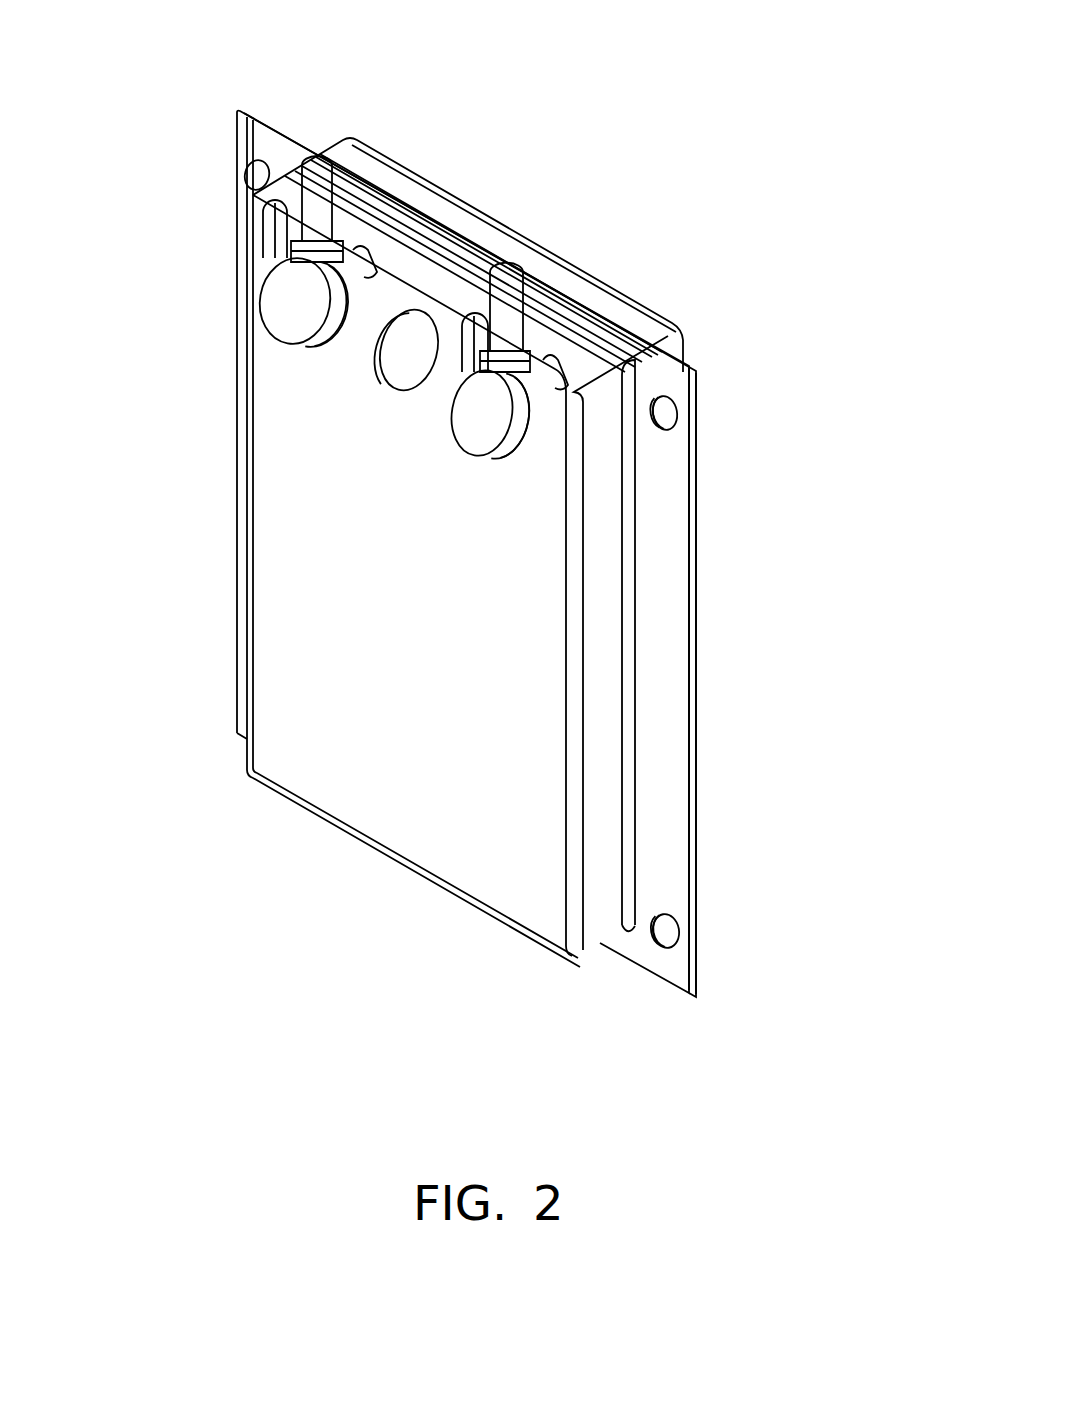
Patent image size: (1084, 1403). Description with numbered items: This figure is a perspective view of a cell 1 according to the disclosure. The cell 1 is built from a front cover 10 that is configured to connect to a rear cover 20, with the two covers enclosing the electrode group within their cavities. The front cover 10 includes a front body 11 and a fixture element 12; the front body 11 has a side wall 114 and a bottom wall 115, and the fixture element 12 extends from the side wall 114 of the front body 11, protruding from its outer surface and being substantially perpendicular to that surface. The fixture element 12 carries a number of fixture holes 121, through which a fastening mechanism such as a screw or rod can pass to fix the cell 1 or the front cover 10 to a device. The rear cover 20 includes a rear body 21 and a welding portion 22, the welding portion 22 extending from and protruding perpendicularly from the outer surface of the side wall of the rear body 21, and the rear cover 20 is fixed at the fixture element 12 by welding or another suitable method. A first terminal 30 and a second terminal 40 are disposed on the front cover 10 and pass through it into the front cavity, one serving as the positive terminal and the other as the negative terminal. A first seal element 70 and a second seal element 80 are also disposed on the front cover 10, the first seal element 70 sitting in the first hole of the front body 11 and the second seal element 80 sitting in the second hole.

The cell 1 is at (724, 74).
The front cover 10 is at (707, 685).
The front body 11 is at (554, 539).
The side wall 114 is at (607, 770).
The bottom wall 115 is at (507, 818).
The fixture element 12 is at (652, 590).
The fixture hole 121 is at (672, 408).
The rear cover 20 is at (475, 255).
The rear body 21 is at (600, 266).
The welding portion 22 is at (615, 322).
The first terminal 30 is at (326, 156).
The second terminal 40 is at (518, 265).
The first seal element 70 is at (279, 311).
The second seal element 80 is at (468, 428).